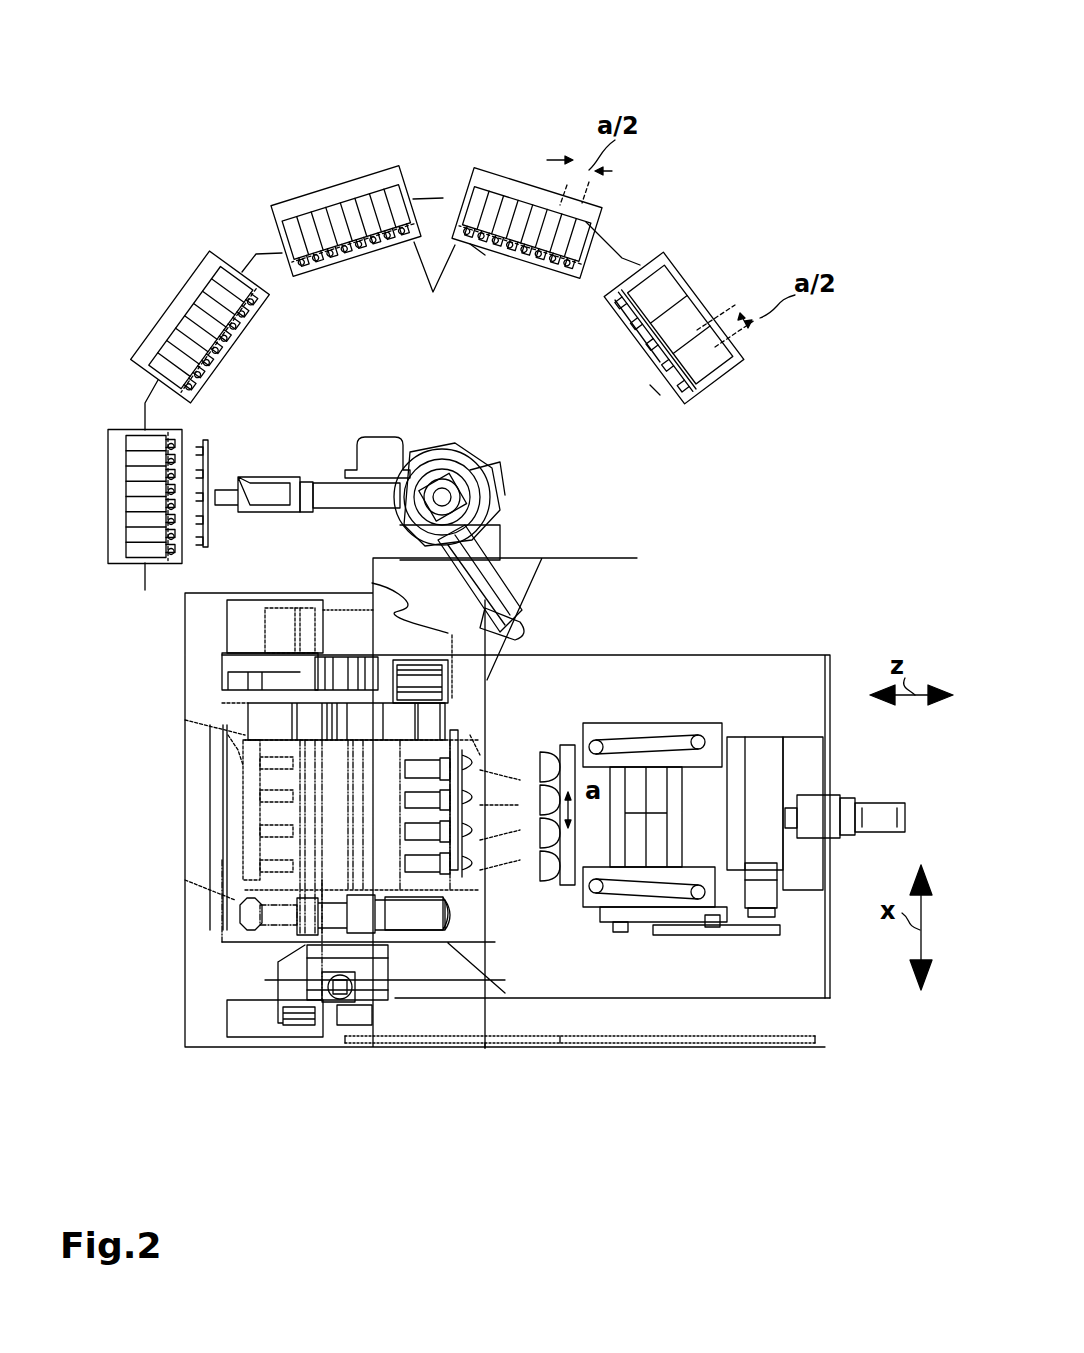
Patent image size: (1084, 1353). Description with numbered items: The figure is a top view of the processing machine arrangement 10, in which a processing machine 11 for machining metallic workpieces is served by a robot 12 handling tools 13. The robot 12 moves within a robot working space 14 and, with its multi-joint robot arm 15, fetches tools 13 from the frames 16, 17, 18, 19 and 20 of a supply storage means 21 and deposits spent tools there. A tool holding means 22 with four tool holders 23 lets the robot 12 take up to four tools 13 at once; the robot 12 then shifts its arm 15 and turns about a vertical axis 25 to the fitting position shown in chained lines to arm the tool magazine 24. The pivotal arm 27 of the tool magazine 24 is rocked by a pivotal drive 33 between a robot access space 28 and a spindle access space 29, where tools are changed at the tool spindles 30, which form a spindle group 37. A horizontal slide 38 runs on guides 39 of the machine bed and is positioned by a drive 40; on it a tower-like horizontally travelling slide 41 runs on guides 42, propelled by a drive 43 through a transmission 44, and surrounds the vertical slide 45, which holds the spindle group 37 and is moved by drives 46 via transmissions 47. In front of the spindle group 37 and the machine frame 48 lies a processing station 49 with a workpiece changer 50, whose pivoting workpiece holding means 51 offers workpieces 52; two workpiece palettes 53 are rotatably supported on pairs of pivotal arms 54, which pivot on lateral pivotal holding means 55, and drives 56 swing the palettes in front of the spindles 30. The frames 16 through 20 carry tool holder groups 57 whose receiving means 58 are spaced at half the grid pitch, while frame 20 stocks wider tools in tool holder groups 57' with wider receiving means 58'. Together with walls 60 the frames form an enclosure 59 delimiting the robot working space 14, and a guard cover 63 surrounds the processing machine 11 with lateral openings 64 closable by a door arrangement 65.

The processing machine arrangement 10 is at (798, 175).
The processing machine 11 is at (745, 632).
The robot 12 is at (470, 432).
The tools 13 is at (712, 290).
The robot working space 14 is at (402, 357).
The robot arm 15 is at (307, 482).
The frame 16 is at (108, 540).
The frame 17 is at (182, 285).
The frame 18 is at (315, 195).
The frame 19 is at (555, 190).
The frame 20 is at (688, 403).
The supply storage means 21 is at (640, 230).
The tool holding means 22 is at (243, 480).
The tool holders 23 is at (206, 445).
The tool magazine 24 is at (391, 598).
The vertical axis 25 is at (457, 468).
The pivotal arm 27 is at (460, 725).
The robot access space 28 is at (555, 625).
The spindle access space 29 is at (505, 740).
The tool spindles 30 is at (503, 820).
The pivotal drive 33 is at (432, 640).
The spindle group 37 is at (580, 730).
The horizontal slide 38 is at (745, 760).
The guides 39 is at (795, 745).
The drive 40 is at (870, 800).
The horizontally travelling slide 41 is at (598, 732).
The guides 42 is at (615, 930).
The drive 43 is at (755, 865).
The transmission 44 is at (770, 935).
The vertical slide 45 is at (568, 892).
The drives 46 is at (698, 735).
The transmissions 47 is at (640, 745).
The machine frame 48 is at (790, 672).
The processing station 49 is at (250, 1078).
The workpiece changer 50 is at (205, 905).
The workpiece holding means 51 is at (215, 810).
The workpieces 52 is at (215, 842).
The workpiece palettes 53 is at (475, 918).
The pairs of pivotal arms 54 is at (418, 937).
The pivotal holding means 55 is at (385, 1010).
The drives 56 is at (258, 975).
The tool holder groups 57 is at (434, 284).
The tool holder groups 57' is at (627, 393).
The receiving means 58 is at (497, 278).
The receiving means 58' is at (606, 331).
The enclosure 59 is at (725, 403).
The walls 60 is at (145, 590).
The guard cover 63 is at (715, 1050).
The lateral openings 64 is at (580, 1045).
The door arrangement 65 is at (485, 1048).